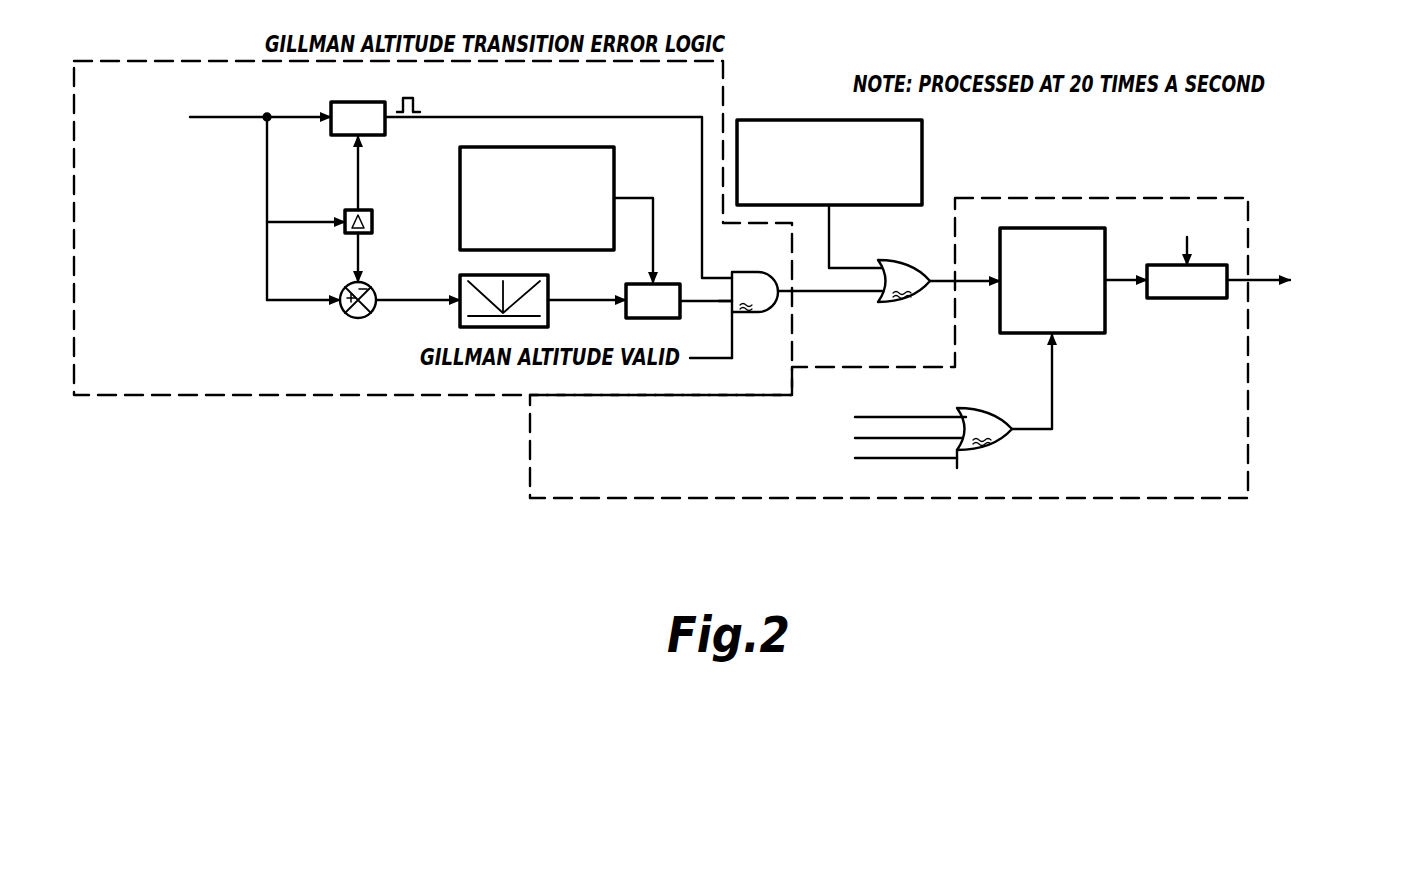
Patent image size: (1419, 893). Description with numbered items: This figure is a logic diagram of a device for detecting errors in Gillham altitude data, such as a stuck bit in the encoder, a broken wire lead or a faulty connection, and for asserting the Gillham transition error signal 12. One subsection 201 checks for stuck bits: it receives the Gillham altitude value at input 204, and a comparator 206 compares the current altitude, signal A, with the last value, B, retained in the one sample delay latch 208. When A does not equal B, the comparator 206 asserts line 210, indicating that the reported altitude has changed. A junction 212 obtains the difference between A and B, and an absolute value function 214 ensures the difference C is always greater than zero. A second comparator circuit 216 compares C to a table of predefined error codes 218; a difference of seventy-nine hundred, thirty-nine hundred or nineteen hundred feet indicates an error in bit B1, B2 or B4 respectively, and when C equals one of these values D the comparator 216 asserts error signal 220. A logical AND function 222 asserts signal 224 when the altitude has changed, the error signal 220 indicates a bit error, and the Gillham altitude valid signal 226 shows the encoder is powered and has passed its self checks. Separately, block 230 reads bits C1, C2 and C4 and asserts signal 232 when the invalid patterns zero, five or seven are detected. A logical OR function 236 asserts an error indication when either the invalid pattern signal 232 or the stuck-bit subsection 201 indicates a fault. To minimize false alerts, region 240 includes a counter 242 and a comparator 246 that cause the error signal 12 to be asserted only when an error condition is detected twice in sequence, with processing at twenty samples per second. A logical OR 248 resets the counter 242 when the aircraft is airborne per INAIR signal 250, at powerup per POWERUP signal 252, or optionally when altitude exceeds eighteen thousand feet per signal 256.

The stuck-bit checking subsection 201 is at (167, 60).
The Gillham altitude input 204 is at (247, 117).
The comparator 206 is at (358, 102).
The one sample delay latch 208 is at (373, 222).
The altitude changed signal line 210 is at (508, 117).
The junction 212 is at (352, 318).
The absolute value function 214 is at (460, 290).
The second comparator circuit 216 is at (626, 312).
The error codes table 218 is at (614, 170).
The error signal 220 is at (720, 303).
The logical AND function 222 is at (806, 315).
The AND output signal 224 is at (852, 292).
The Gillham altitude valid signal 226 is at (720, 360).
The invalid bit pattern check block 230 is at (922, 142).
The invalid pattern signal 232 is at (855, 266).
The logical OR function 236 is at (939, 281).
The false alert minimization region 240 is at (1232, 198).
The counter 242 is at (1090, 333).
The comparator 246 is at (1185, 300).
The logical OR 248 is at (1004, 401).
The INAIR signal 250 is at (903, 416).
The POWERUP signal 252 is at (918, 437).
The altitude exceeds 18,000 feet signal 256 is at (902, 458).
The Gillham transition error signal 12 is at (1262, 278).